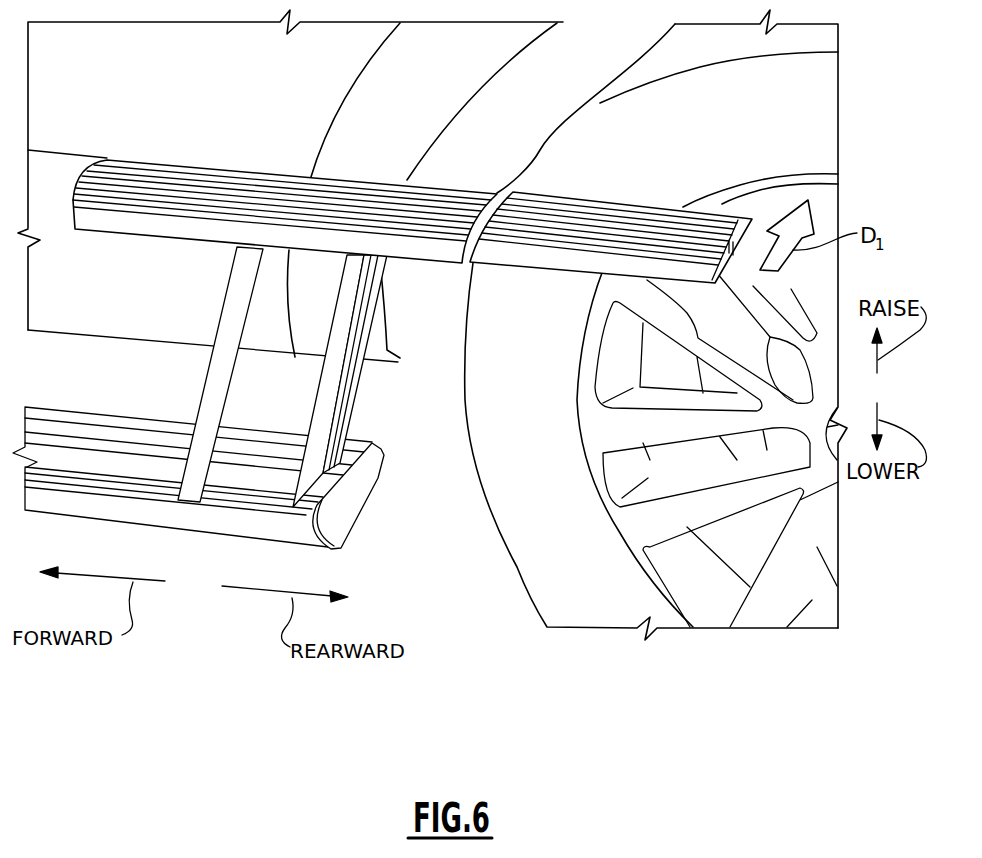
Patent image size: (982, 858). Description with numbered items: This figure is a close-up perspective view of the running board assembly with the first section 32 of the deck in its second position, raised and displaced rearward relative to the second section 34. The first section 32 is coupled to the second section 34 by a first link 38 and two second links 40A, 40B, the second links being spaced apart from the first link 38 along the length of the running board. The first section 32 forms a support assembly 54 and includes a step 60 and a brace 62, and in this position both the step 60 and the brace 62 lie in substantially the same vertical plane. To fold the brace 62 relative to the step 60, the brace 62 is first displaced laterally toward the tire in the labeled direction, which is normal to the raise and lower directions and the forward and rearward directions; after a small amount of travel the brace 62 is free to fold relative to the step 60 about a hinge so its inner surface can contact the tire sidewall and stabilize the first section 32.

The first section 32 is at (395, 175).
The second section 34 is at (82, 400).
The first link 38 is at (205, 383).
The second link 40A is at (323, 400).
The second link 40B is at (350, 384).
The support assembly 54 is at (505, 175).
The step 60 is at (260, 182).
The brace 62 is at (535, 247).